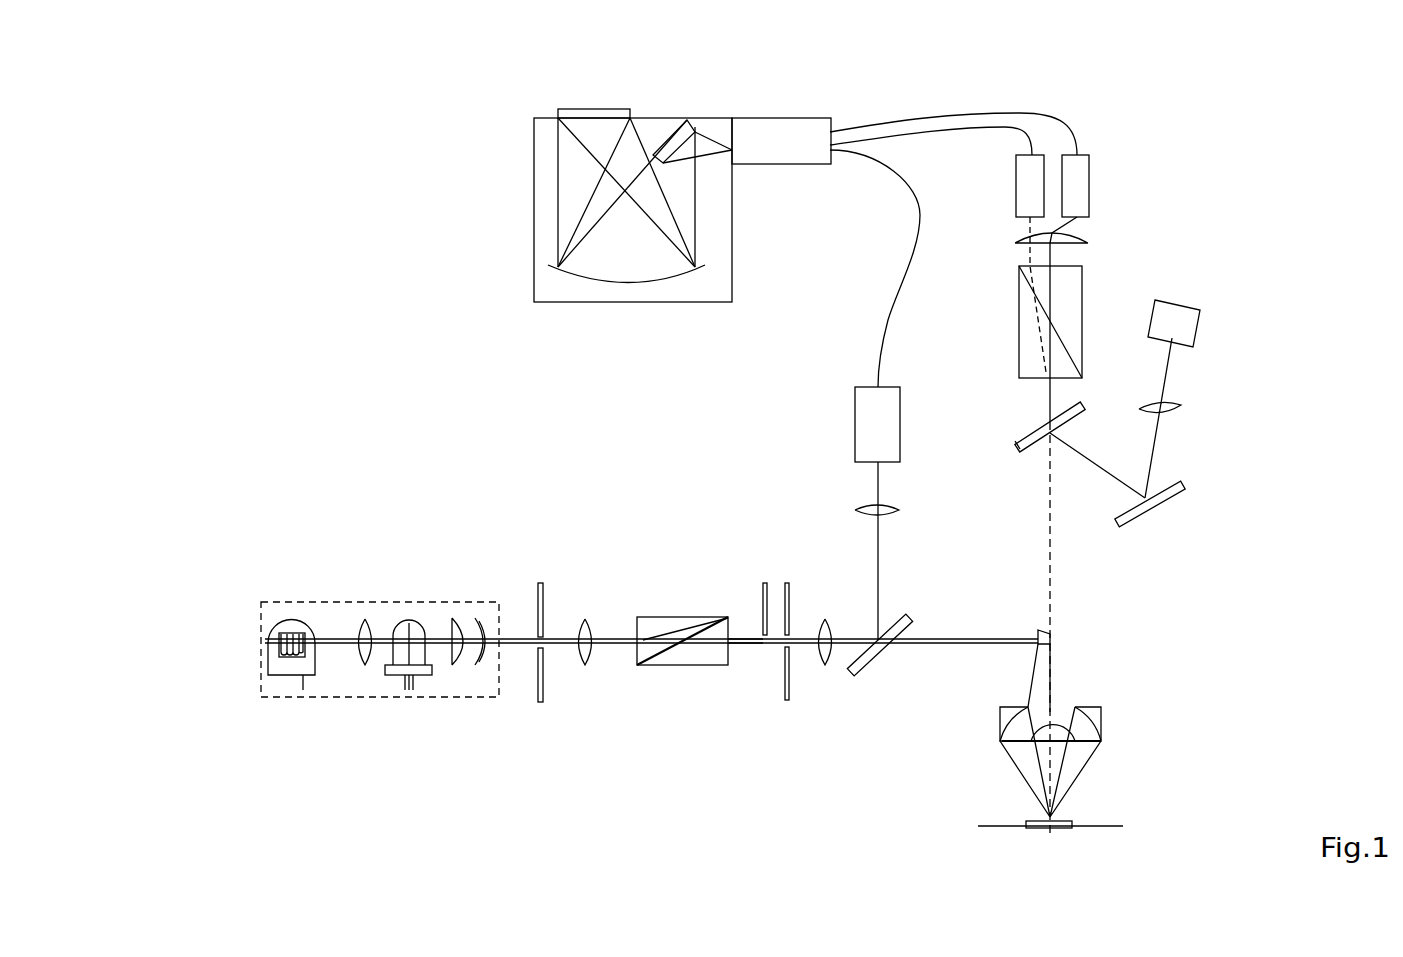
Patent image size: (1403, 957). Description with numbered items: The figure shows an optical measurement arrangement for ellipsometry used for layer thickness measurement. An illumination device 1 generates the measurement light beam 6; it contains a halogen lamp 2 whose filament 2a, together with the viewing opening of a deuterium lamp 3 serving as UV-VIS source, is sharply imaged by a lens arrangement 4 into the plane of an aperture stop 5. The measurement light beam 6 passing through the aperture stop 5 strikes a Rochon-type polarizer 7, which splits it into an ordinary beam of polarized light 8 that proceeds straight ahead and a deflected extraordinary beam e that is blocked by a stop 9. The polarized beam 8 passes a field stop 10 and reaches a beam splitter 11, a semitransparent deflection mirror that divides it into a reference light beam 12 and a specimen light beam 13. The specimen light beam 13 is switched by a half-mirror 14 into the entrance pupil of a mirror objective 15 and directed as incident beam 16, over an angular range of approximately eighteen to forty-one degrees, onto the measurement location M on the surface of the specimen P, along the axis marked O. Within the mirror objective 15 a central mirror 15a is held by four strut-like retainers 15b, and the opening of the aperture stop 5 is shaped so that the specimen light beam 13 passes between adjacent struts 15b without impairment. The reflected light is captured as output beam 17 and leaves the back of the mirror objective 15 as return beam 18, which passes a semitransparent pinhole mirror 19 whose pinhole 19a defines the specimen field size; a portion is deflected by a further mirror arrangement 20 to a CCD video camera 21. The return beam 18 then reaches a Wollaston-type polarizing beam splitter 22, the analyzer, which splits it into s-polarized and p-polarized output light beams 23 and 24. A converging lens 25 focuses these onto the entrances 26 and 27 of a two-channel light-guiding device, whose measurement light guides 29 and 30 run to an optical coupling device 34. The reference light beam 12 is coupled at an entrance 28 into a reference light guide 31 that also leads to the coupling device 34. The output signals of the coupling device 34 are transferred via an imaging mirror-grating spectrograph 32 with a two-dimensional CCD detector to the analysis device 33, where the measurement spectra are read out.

The illumination device 1 is at (262, 690).
The halogen lamp 2 is at (291, 621).
The filament 2a is at (300, 633).
The deuterium lamp 3 is at (393, 673).
The lens arrangement 4 is at (480, 668).
The aperture stop 5 is at (545, 703).
The measurement light beam 6 is at (515, 637).
The polarizer 7 is at (668, 663).
The ordinary beam of polarized light 8 is at (745, 644).
The stop 9 is at (763, 583).
The field stop 10 is at (787, 583).
The beam splitter 11 is at (852, 681).
The reference light beam 12 is at (880, 557).
The specimen light beam 13 is at (930, 640).
The half-mirror 14 is at (1036, 646).
The mirror objective 15 is at (1000, 745).
The central mirror 15a is at (1057, 715).
The struts 15b is at (1093, 723).
The incident beam 16 is at (1020, 770).
The output beam 17 is at (1083, 752).
The return beam 18 is at (1050, 526).
The pinhole mirror 19 is at (1024, 433).
The pinhole 19a is at (1023, 453).
The further mirror arrangement 20 is at (1165, 507).
The CCD video camera 21 is at (1187, 334).
The polarizing beam splitter 22 is at (1075, 312).
The output light beam 23 is at (1085, 261).
The output light beam 24 is at (1015, 249).
The converging lens 25 is at (1060, 235).
The entrance 26 is at (1077, 172).
The entrance 27 is at (1025, 188).
The focusing unit 28 is at (868, 420).
The measurement light guide 29 is at (1053, 116).
The measurement light guide 30 is at (930, 127).
The reference light guide 31 is at (893, 289).
The spectrograph 32 is at (625, 305).
The analysis device 33 is at (600, 109).
The optical coupling device 34 is at (760, 121).
The extraordinary beam of polarized light e is at (761, 608).
The optical axis of objective O is at (1052, 690).
The measurement location M is at (1050, 817).
The specimen P is at (1067, 833).